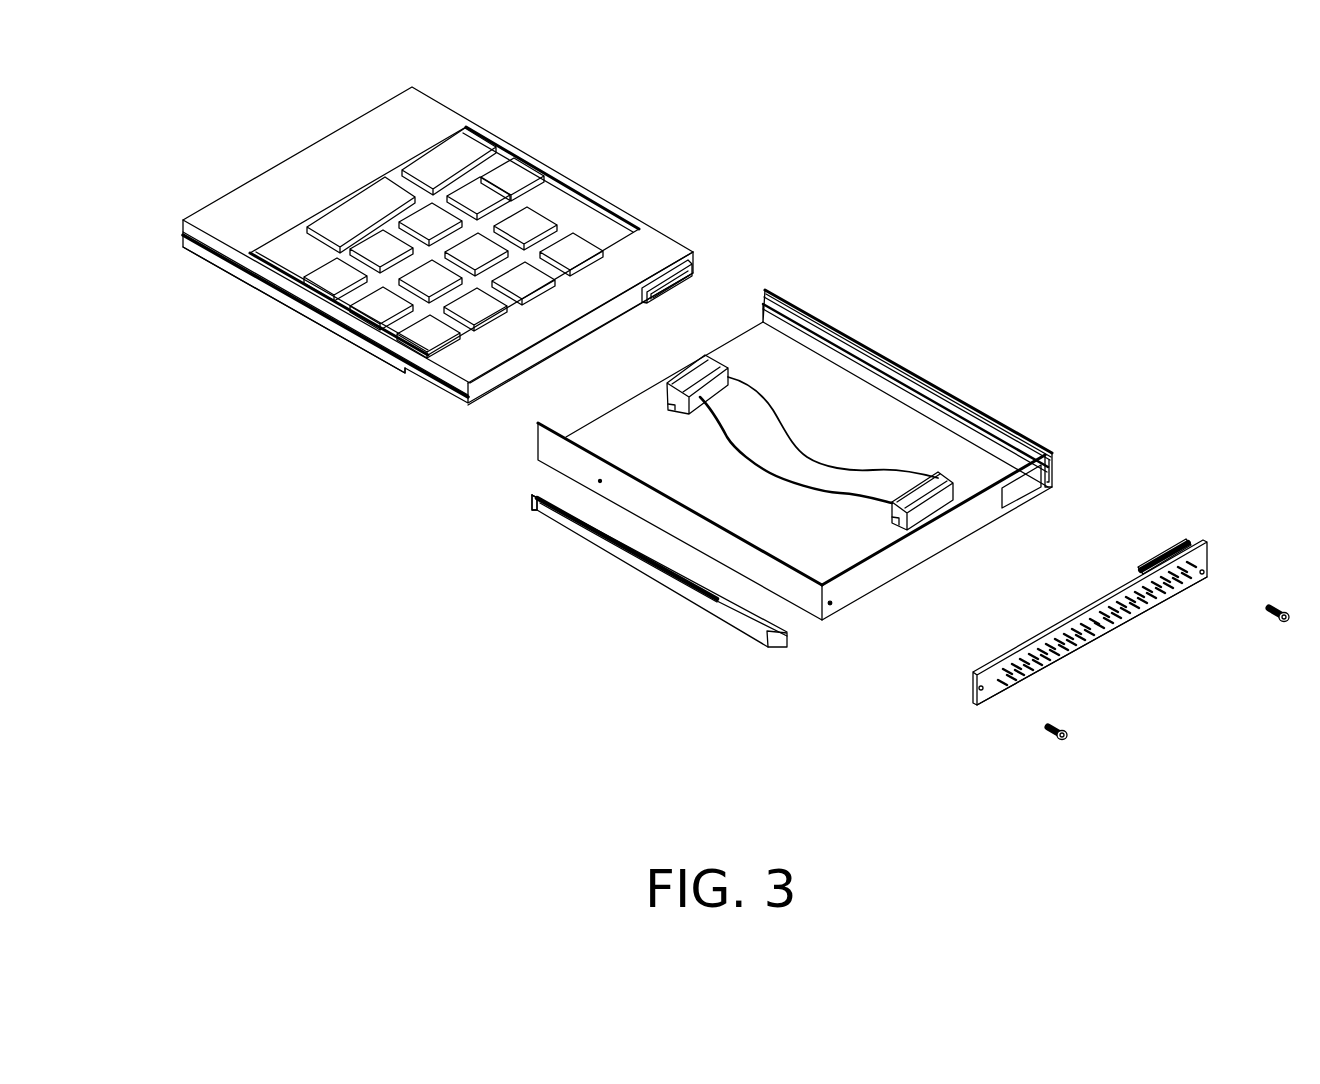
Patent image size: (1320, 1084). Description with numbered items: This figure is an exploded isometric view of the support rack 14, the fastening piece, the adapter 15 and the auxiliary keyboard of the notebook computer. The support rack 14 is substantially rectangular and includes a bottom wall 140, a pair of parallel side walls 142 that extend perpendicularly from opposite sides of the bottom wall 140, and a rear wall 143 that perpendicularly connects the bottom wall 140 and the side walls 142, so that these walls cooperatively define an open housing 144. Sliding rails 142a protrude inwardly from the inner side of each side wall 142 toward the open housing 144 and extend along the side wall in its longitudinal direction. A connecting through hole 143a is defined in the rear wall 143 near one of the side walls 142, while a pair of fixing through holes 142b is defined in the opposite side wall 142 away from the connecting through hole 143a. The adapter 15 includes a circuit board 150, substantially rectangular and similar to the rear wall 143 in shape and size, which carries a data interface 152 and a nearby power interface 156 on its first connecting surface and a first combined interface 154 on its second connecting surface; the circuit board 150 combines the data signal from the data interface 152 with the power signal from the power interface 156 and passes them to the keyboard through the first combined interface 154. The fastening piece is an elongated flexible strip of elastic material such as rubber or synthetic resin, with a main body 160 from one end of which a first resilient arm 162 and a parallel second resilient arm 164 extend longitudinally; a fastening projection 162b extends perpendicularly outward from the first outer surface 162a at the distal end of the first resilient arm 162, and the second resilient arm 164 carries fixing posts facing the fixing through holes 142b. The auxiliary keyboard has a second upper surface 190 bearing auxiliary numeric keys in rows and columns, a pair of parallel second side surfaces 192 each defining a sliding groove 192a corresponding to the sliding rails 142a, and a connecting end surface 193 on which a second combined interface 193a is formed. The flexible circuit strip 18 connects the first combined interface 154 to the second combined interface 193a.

The support rack 14 is at (826, 300).
The adapter 15 is at (1205, 523).
The flexible circuit strip 18 is at (833, 477).
The bottom wall 140 is at (738, 350).
The side walls 142 is at (1005, 445).
The sliding rails 142a is at (852, 345).
The fixing through holes 142b is at (787, 590).
The rear wall 143 is at (882, 573).
The connecting through hole 143a is at (1020, 497).
The open housing 144 is at (620, 423).
The circuit board 150 is at (1192, 563).
The data interface 152 is at (1163, 600).
The first combined interface 154 is at (1167, 557).
The power interface 156 is at (1040, 655).
The main body 160 is at (743, 610).
The first resilient arm 162 is at (588, 533).
The first outer surface 162a is at (663, 577).
The fastening projection 162b is at (530, 505).
The second resilient arm 164 is at (532, 496).
The second upper surface 190 is at (430, 113).
The second side surfaces 192 is at (225, 265).
The sliding groove 192a is at (183, 238).
The connecting end surface 193 is at (613, 303).
The second combined interface 193a is at (690, 262).